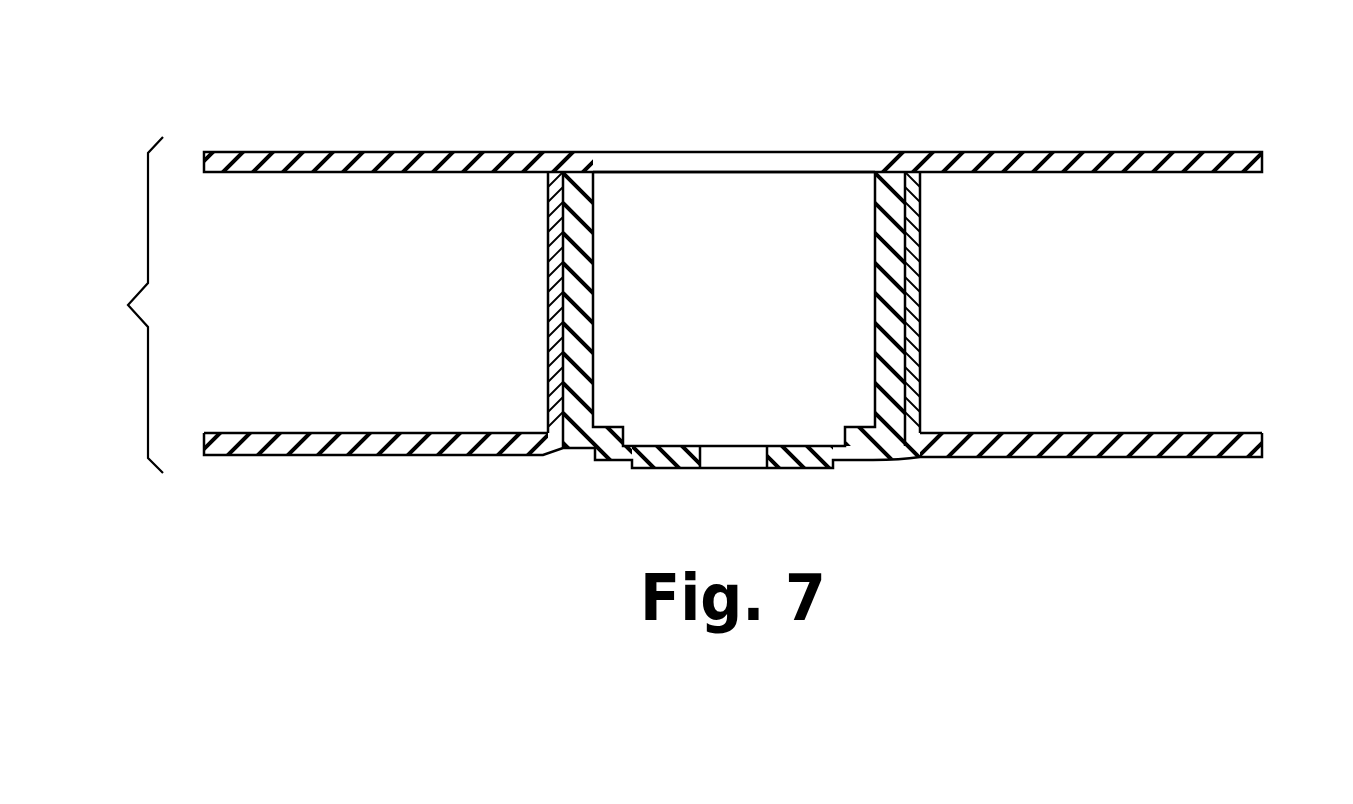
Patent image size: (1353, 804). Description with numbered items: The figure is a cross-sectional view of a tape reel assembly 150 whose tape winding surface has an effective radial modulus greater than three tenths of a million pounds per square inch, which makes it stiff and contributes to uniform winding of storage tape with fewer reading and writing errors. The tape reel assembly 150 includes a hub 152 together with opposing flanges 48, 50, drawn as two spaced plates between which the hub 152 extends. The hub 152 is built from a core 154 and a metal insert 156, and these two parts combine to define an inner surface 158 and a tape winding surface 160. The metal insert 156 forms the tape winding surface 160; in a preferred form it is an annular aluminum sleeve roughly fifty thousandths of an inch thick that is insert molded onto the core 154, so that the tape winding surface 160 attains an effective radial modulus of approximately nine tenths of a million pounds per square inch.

The flange 48 is at (1270, 163).
The flange 50 is at (1262, 450).
The tape reel assembly 150 is at (113, 305).
The hub 152 is at (340, 307).
The core 154 is at (560, 249).
The metal insert 156 is at (538, 303).
The inner surface 158 is at (593, 207).
The tape winding surface 160 is at (560, 394).